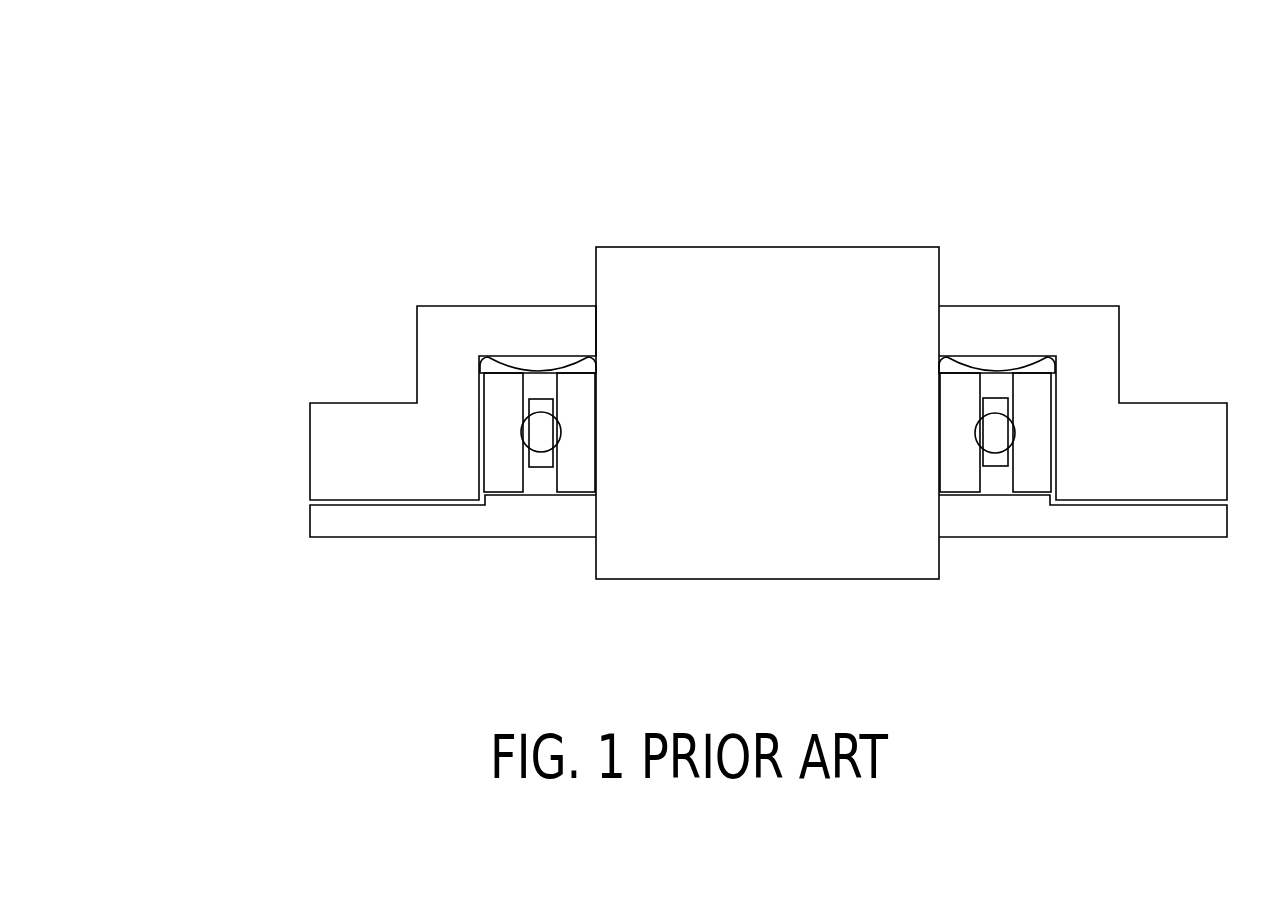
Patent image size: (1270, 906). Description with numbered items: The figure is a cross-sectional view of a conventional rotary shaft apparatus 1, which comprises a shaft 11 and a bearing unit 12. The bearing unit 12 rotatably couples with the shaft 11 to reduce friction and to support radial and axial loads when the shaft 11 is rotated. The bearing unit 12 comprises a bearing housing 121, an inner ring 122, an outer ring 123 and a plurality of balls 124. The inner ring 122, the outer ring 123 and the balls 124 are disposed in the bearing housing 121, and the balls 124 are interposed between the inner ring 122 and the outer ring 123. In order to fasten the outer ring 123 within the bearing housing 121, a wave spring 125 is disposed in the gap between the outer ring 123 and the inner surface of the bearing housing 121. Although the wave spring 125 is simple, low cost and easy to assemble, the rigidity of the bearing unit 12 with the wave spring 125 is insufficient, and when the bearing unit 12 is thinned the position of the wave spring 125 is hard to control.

The rotary shaft apparatus 1 is at (1222, 80).
The shaft 11 is at (849, 265).
The bearing unit 12 is at (327, 219).
The bearing housing 121 is at (437, 319).
The inner ring 122 is at (572, 385).
The outer ring 123 is at (501, 387).
The balls 124 is at (542, 433).
The wave spring 125 is at (578, 368).